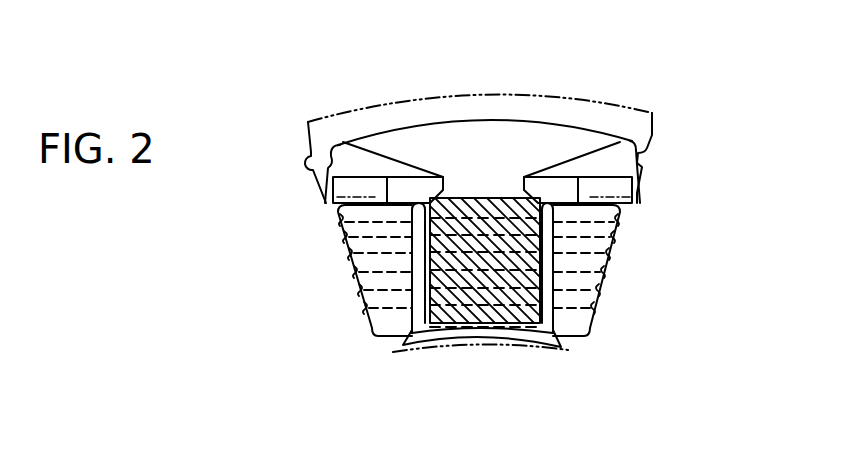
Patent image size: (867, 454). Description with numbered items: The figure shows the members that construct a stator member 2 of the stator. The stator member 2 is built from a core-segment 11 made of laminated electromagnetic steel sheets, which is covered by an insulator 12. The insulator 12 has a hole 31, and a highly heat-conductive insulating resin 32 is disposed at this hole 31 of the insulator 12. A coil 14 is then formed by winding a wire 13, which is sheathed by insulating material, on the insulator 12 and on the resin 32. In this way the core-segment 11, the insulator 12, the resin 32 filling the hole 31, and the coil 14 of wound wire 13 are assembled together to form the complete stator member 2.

The stator member 2 is at (598, 80).
The core-segment 11 is at (658, 125).
The insulator 12 is at (620, 183).
The wire 13 is at (606, 268).
The coil 14 is at (340, 262).
The hole 31 is at (413, 342).
The highly heat-conductive insulating resin 32 is at (462, 300).